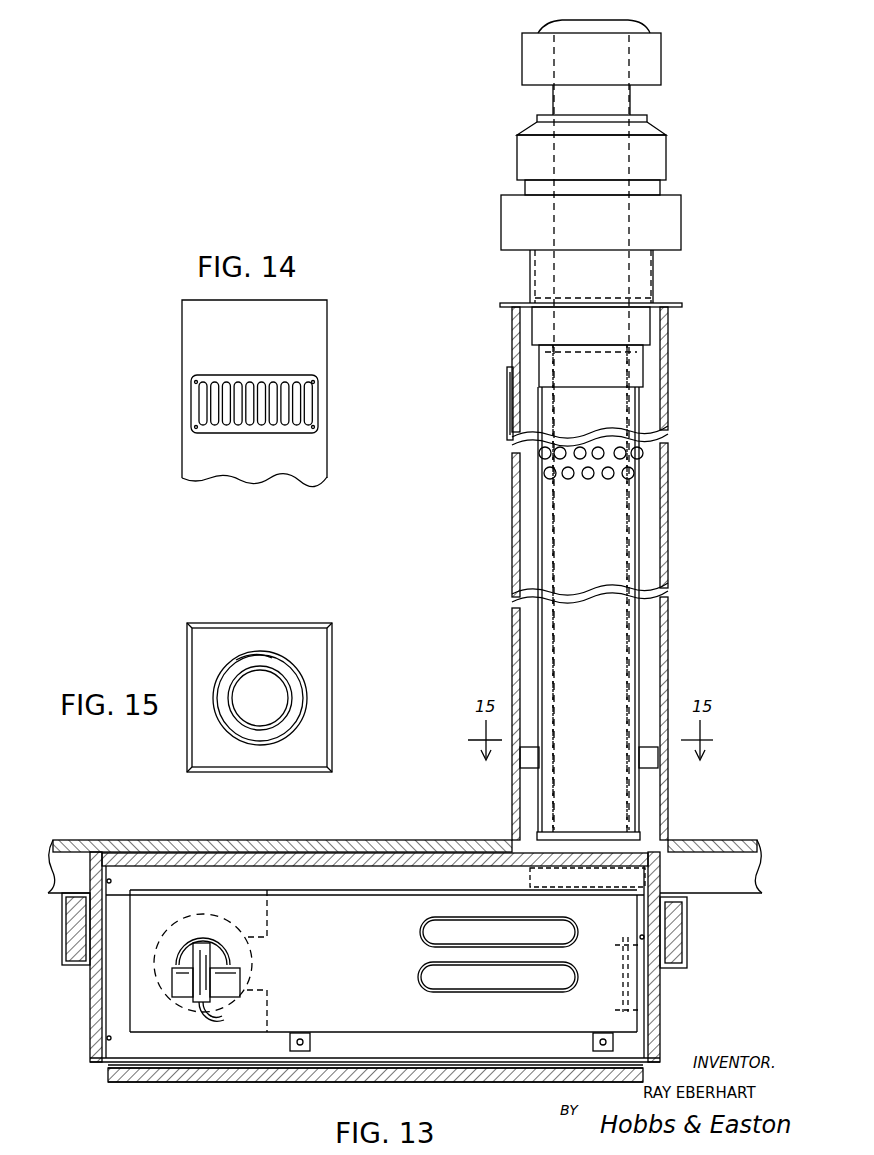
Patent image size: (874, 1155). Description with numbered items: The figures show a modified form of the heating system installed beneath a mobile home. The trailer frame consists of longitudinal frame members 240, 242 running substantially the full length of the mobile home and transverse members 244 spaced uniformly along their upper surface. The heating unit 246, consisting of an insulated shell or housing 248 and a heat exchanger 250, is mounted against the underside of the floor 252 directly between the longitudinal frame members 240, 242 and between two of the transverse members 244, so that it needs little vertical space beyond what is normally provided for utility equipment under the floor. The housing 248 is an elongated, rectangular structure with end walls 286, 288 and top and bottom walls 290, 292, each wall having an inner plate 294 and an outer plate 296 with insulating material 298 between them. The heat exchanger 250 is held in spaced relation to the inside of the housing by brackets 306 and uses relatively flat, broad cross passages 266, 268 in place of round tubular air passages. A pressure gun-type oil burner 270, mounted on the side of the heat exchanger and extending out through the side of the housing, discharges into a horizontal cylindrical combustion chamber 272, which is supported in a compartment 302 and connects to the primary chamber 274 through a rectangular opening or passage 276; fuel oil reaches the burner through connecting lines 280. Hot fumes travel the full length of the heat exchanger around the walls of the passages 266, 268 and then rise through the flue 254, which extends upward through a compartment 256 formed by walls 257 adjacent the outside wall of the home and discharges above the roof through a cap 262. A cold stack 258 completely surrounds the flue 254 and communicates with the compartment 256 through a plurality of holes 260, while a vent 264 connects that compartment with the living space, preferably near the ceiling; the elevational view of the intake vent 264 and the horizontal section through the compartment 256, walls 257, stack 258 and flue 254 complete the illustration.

In FIG. 13, the cap 262 is at (650, 104).
In FIG. 13, the vent 264 is at (507, 417).
In FIG. 14, the vent 264 is at (208, 410).
In FIG. 13, the holes 260 is at (634, 473).
In FIG. 13, the compartment 256 is at (530, 563).
In FIG. 15, the compartment 256 is at (315, 667).
In FIG. 13, the walls 257 is at (668, 557).
In FIG. 14, the walls 257 is at (190, 467).
In FIG. 15, the walls 257 is at (265, 626).
In FIG. 13, the cold stack 258 is at (538, 644).
In FIG. 15, the cold stack 258 is at (240, 661).
In FIG. 13, the flue 254 is at (612, 675).
In FIG. 15, the flue 254 is at (268, 728).
In FIG. 13, the heating unit 246 is at (215, 852).
In FIG. 13, the transverse members 244 is at (733, 895).
In FIG. 13, the floor 252 is at (337, 842).
In FIG. 13, the top wall 290 is at (462, 827).
In FIG. 13, the end wall 286 is at (90, 1023).
In FIG. 13, the end wall 288 is at (660, 1022).
In FIG. 13, the shell or housing 248 is at (90, 1050).
In FIG. 13, the longitudinal frame member 240 is at (60, 970).
In FIG. 13, the longitudinal frame member 242 is at (688, 968).
In FIG. 13, the compartment 302 is at (211, 903).
In FIG. 13, the primary chamber 274 is at (297, 905).
In FIG. 13, the rectangular opening or passage 276 is at (260, 966).
In FIG. 13, the combustion chamber 272 is at (184, 917).
In FIG. 13, the pressure gun-type oil burner 270 is at (194, 958).
In FIG. 13, the connecting lines 280 is at (200, 1019).
In FIG. 13, the cross passage 266 is at (420, 932).
In FIG. 13, the cross passage 268 is at (420, 985).
In FIG. 13, the heat exchanger 250 is at (362, 979).
In FIG. 13, the brackets 306 is at (310, 1045).
In FIG. 13, the bottom wall 292 is at (315, 1109).
In FIG. 13, the inner plate 294 is at (180, 1048).
In FIG. 13, the outer plate 296 is at (185, 1082).
In FIG. 13, the insulating material 298 is at (250, 1082).